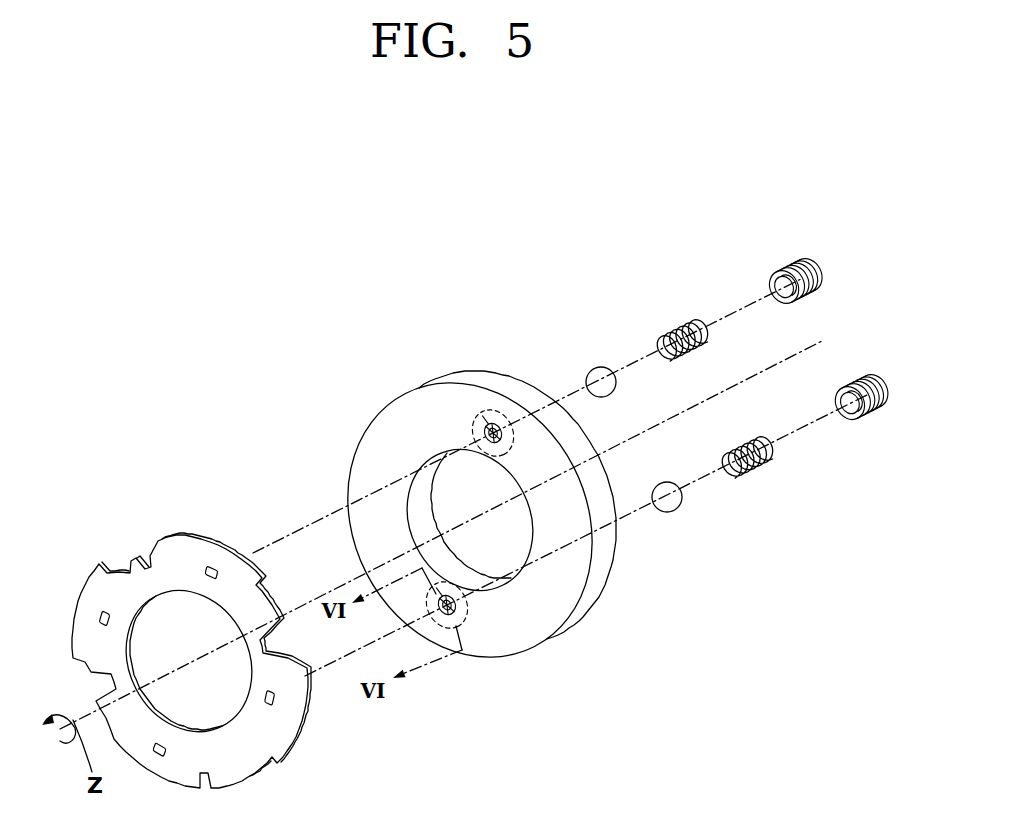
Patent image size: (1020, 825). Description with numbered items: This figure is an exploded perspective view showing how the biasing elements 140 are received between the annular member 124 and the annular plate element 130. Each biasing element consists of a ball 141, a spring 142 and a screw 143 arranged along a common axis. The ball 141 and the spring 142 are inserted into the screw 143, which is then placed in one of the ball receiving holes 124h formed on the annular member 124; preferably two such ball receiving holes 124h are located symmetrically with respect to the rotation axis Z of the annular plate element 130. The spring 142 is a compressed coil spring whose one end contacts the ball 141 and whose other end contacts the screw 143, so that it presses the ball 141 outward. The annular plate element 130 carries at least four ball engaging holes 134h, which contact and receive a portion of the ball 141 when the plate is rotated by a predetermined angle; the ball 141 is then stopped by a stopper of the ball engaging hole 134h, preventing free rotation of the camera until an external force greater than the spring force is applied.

The annular member 124 is at (470, 520).
The ball receiving holes 124h is at (488, 420).
The annular plate element 130 is at (191, 637).
The ball engaging holes 134h is at (213, 563).
The biasing elements 140 is at (732, 352).
The ball 141 is at (599, 368).
The spring 142 is at (685, 320).
The screw 143 is at (793, 257).